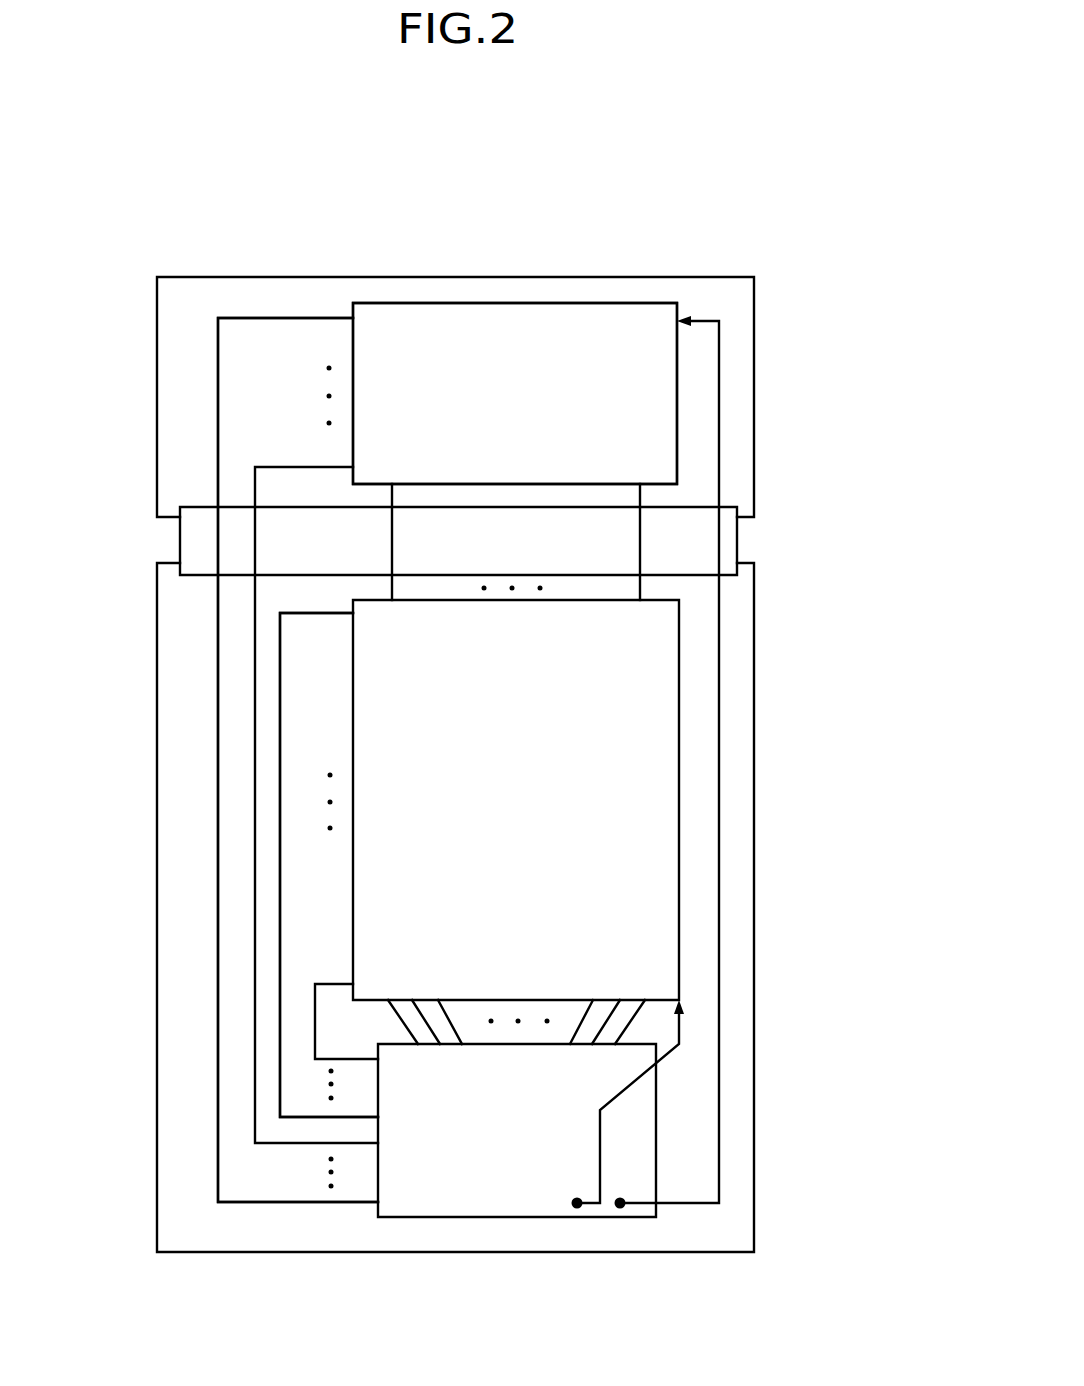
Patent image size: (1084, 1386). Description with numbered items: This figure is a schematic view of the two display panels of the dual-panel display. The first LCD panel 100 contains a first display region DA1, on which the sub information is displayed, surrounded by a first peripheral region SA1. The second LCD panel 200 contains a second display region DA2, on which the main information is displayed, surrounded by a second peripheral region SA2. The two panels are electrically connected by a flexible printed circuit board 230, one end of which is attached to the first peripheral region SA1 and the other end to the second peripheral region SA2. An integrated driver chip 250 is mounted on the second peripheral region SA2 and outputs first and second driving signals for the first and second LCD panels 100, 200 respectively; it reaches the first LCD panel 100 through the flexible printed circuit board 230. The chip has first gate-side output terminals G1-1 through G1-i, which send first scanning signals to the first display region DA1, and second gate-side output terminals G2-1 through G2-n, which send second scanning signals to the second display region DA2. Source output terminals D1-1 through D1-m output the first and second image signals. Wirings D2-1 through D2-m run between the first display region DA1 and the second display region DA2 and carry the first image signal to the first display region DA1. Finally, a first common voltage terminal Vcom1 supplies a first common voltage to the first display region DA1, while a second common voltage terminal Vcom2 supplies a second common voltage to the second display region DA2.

The first LCD panel 100 is at (754, 327).
The second LCD panel 200 is at (755, 947).
The flexible printed circuit board 230 is at (180, 540).
The integrated driver chip 250 is at (452, 1217).
The first peripheral region SA1 is at (267, 395).
The second peripheral region SA2 is at (204, 727).
The first display region DA1 is at (658, 397).
The second display region DA2 is at (660, 792).
The wiring D2-1 is at (392, 540).
The wiring D2-m is at (640, 540).
The source output terminal D1-1 is at (393, 1000).
The source output terminal D1-m is at (637, 1000).
The second gate-side output terminal G2-1 is at (315, 1020).
The second gate-side output terminal G2-n is at (280, 1057).
The first gate-side output terminal G1-1 is at (255, 1115).
The first gate-side output terminal G1-i is at (218, 1159).
The first common voltage terminal Vcom1 is at (674, 774).
The second common voltage terminal Vcom2 is at (608, 1104).